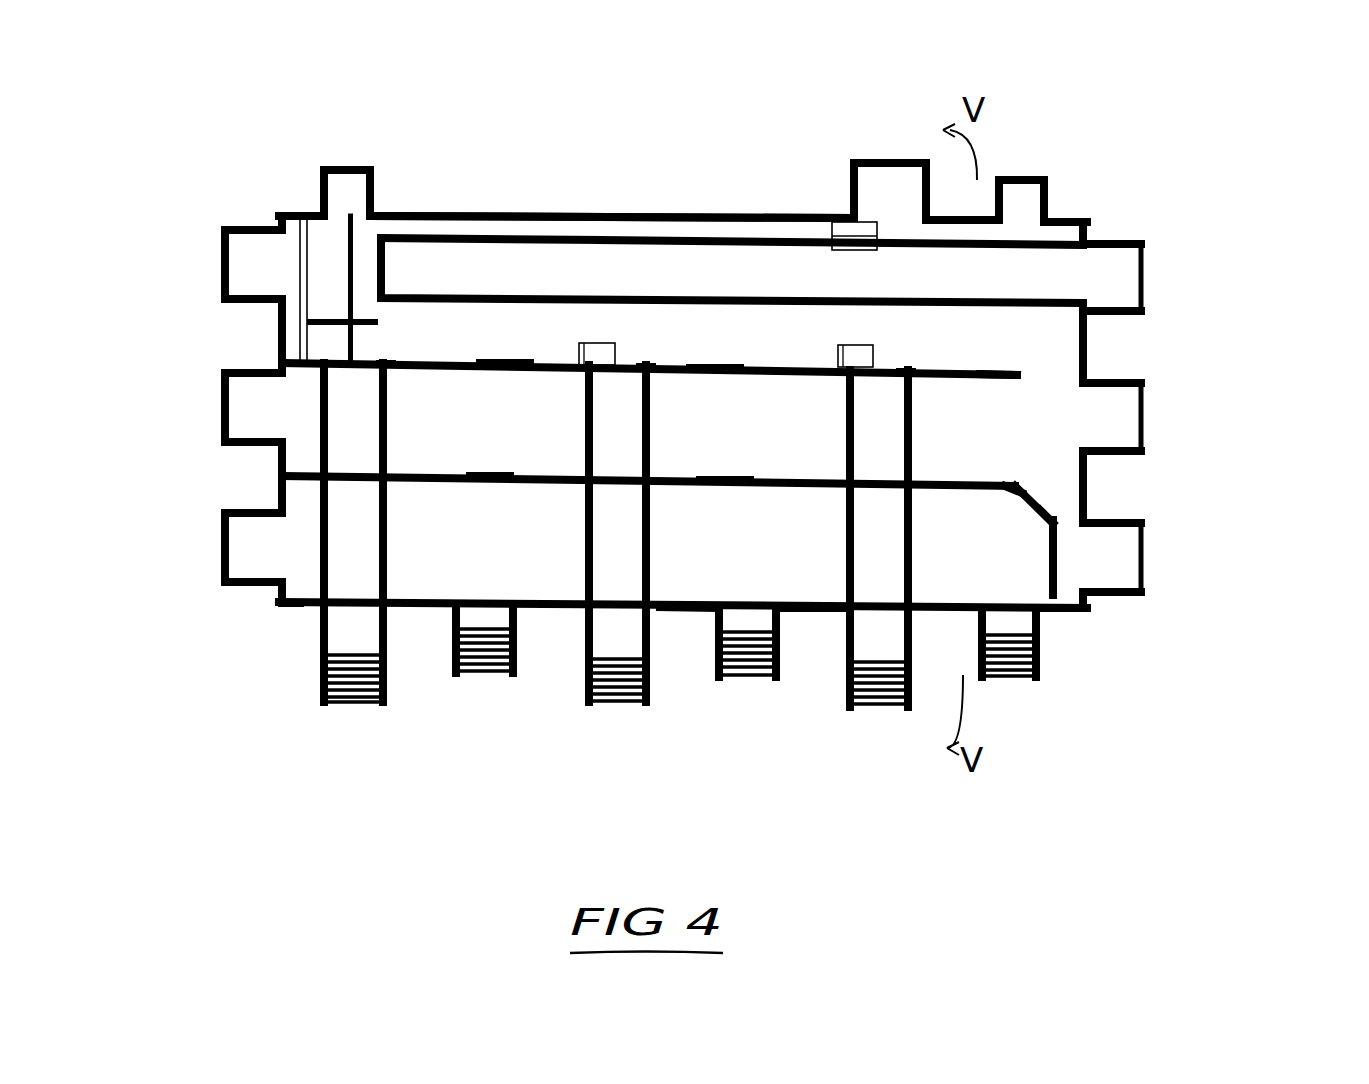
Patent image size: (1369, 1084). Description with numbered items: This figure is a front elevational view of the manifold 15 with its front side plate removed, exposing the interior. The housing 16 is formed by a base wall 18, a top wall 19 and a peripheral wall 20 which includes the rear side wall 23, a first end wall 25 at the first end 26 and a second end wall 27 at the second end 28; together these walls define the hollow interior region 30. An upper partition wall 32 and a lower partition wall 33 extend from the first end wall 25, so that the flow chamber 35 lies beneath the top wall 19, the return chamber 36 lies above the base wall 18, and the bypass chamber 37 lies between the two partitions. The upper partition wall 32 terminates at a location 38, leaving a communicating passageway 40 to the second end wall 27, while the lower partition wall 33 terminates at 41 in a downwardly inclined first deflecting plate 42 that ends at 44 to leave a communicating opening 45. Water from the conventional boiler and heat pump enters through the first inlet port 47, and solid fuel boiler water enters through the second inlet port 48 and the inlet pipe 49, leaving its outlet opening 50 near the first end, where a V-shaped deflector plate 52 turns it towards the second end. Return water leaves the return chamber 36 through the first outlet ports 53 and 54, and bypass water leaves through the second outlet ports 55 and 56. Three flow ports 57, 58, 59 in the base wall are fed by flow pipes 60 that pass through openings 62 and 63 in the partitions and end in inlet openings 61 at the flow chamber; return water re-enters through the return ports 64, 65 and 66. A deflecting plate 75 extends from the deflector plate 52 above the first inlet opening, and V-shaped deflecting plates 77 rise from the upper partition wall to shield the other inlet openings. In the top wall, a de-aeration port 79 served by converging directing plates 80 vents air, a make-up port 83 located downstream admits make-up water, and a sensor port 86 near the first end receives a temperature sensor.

The manifold 15 is at (1242, 99).
The housing 16 is at (500, 214).
The base wall 18 is at (810, 612).
The top wall 19 is at (690, 214).
The peripheral wall 20 is at (1045, 614).
The rear side wall 23 is at (687, 590).
The first end wall 25 is at (282, 598).
The first end 26 is at (277, 487).
The second end wall 27 is at (1087, 340).
The second end 28 is at (1087, 497).
The hollow interior region 30 is at (548, 580).
The upper partition wall 32 is at (707, 375).
The lower partition wall 33 is at (717, 482).
The flow chamber 35 is at (585, 226).
The return chamber 36 is at (505, 553).
The bypass chamber 37 is at (525, 445).
The location 38 is at (1017, 379).
The communicating passageway 40 is at (1087, 361).
The termination of lower partition wall 41 is at (1017, 490).
The first deflecting plate 42 is at (1087, 483).
The termination of first deflecting plate 44 is at (1050, 522).
The communicating opening 45 is at (1087, 508).
The first inlet port 47 is at (227, 262).
The second inlet port 48 is at (1150, 277).
The inlet pipe 49 is at (737, 240).
The outlet opening 50 is at (368, 232).
The V-shaped deflector plate 52 is at (303, 212).
The first outlet port 53 is at (222, 540).
The first outlet port 54 is at (1143, 560).
The second outlet port 55 is at (220, 407).
The second outlet port 56 is at (1142, 415).
The flow port 57 is at (350, 702).
The flow port 58 is at (617, 702).
The flow port 59 is at (872, 708).
The flow pipe 60 is at (913, 512).
The inlet opening 61 is at (880, 363).
The opening 62 is at (917, 470).
The opening 63 is at (920, 390).
The return port 64 is at (487, 673).
The return port 65 is at (743, 678).
The return port 66 is at (1015, 678).
The deflecting plate 75 is at (312, 319).
The V-shaped deflecting plates 77 is at (858, 345).
The de-aeration port 79 is at (893, 157).
The directing plates 80 is at (833, 240).
The make-up port 83 is at (1020, 177).
The sensor port 86 is at (342, 168).